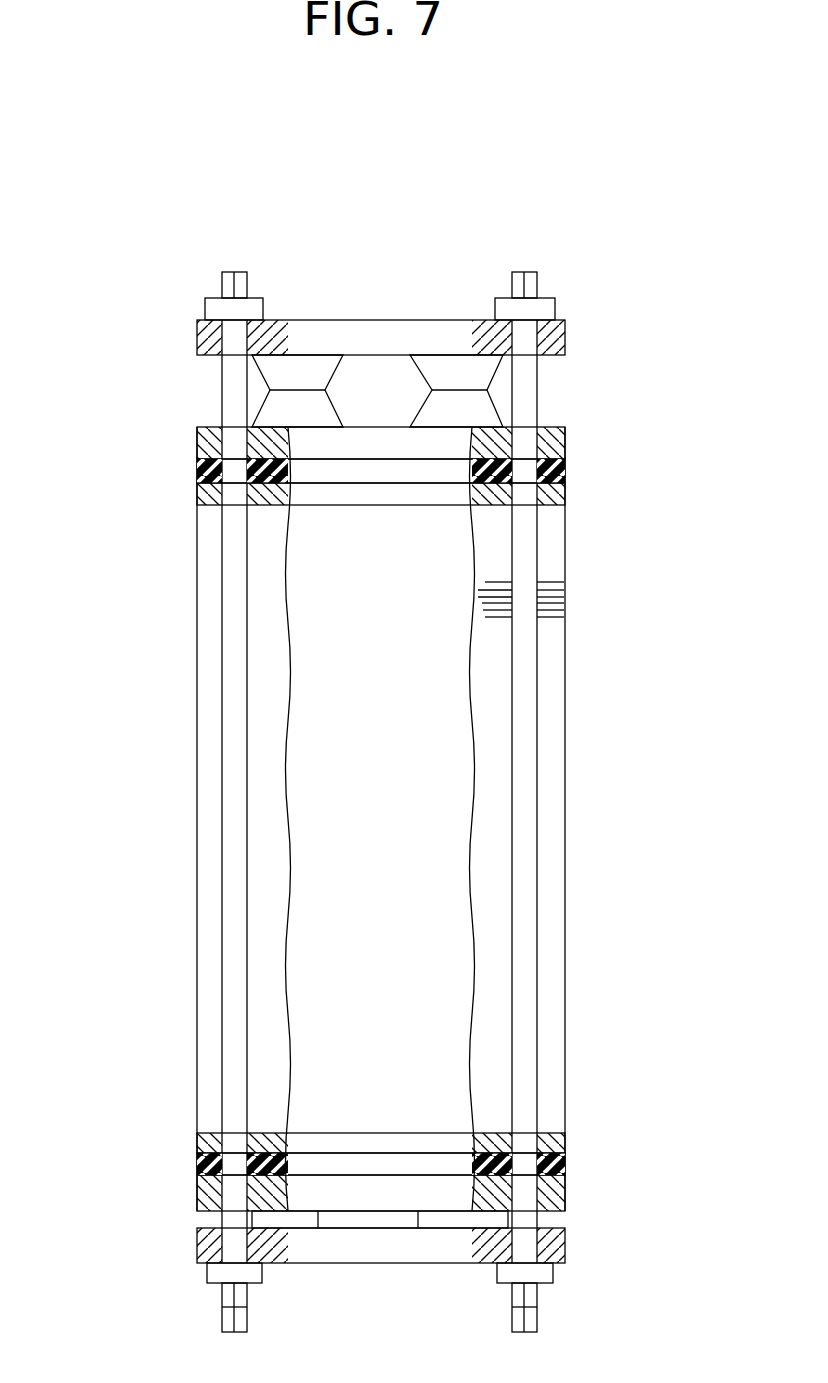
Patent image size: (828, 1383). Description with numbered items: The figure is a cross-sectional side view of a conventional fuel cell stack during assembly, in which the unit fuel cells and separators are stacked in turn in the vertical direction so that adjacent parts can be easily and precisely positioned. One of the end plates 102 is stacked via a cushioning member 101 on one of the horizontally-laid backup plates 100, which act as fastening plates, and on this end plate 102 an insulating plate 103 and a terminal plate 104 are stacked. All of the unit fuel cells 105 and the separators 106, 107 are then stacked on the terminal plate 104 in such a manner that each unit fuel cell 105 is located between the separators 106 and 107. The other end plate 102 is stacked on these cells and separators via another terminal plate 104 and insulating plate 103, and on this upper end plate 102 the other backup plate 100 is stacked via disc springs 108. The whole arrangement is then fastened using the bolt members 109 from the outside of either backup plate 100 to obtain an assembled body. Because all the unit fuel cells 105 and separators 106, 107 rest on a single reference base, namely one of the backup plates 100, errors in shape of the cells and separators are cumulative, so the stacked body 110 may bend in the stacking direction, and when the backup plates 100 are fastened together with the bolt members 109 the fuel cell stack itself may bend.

The backup plate 100 is at (198, 338).
The cushioning member 101 is at (307, 1223).
The end plate 102 is at (198, 437).
The insulating plate 103 is at (198, 471).
The terminal plate 104 is at (198, 490).
The unit fuel cell 105 is at (564, 600).
The separator 106 is at (564, 607).
The separator 107 is at (564, 590).
The disc spring 108 is at (308, 363).
The bolt member 109 is at (228, 1007).
The stacked body 110 is at (192, 804).